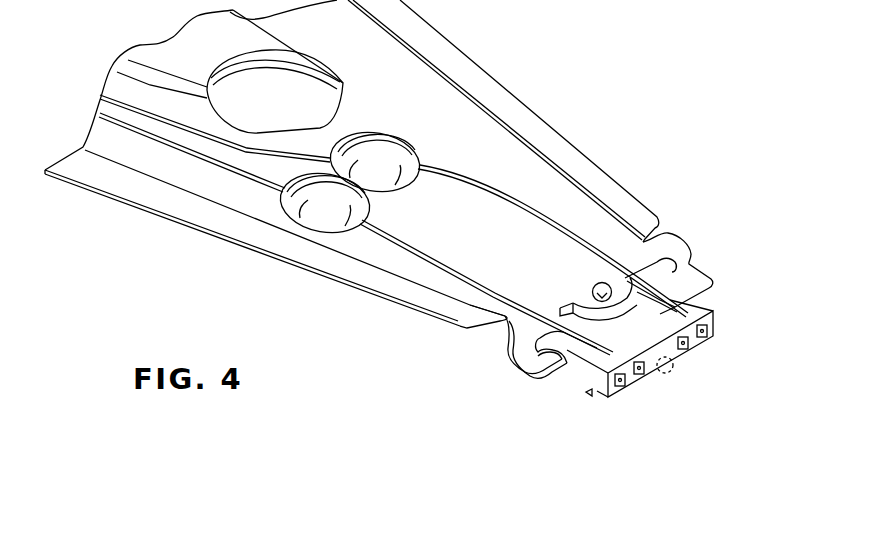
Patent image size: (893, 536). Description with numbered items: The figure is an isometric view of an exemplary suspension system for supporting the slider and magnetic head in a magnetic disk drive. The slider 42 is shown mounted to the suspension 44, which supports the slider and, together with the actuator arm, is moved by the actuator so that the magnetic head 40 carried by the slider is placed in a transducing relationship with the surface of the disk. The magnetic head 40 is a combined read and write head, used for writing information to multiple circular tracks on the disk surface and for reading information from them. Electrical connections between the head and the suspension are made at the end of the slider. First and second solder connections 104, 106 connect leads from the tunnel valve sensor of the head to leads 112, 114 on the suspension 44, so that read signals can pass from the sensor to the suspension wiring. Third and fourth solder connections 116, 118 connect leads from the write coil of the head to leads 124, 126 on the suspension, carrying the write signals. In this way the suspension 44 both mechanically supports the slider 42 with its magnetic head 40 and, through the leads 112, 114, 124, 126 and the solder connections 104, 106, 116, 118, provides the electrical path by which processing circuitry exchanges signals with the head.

The suspension 44 is at (361, 189).
The lead 114 is at (573, 228).
The lead 126 is at (497, 198).
The lead 112 is at (392, 244).
The lead 124 is at (438, 260).
The second solder connection 106 is at (713, 330).
The slider 42 is at (562, 386).
The first solder connection 104 is at (612, 386).
The third solder connection 116 is at (637, 380).
The fourth solder connection 118 is at (687, 350).
The magnetic head 40 is at (677, 377).